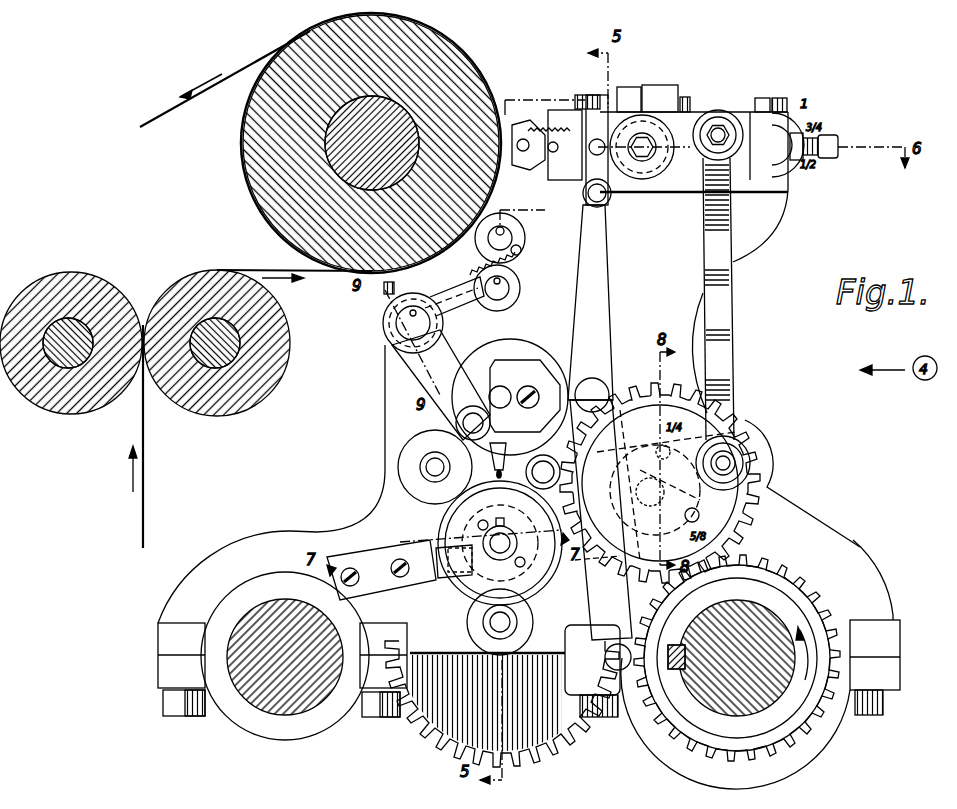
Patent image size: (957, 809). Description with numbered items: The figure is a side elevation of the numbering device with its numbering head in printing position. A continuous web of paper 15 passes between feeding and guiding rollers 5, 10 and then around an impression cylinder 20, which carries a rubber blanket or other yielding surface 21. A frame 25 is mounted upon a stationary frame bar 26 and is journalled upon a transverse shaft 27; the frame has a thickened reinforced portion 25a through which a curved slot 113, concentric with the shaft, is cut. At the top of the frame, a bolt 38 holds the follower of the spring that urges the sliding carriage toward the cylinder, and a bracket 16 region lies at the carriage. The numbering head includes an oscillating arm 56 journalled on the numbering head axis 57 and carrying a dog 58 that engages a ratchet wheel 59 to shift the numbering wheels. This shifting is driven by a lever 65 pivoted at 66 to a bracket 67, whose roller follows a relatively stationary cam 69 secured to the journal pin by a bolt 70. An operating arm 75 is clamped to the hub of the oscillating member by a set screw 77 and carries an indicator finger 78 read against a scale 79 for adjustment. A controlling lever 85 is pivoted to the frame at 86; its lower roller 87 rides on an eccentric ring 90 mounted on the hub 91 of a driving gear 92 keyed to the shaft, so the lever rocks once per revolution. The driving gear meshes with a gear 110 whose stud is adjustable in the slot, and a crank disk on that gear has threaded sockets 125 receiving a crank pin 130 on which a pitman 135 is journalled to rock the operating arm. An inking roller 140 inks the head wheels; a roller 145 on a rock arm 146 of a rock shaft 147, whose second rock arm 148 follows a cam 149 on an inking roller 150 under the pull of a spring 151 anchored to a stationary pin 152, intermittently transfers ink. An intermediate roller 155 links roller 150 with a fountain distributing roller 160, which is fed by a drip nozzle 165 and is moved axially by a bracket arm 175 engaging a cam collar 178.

The feeding and guiding roller 5 is at (64, 413).
The feeding and guiding roller 10 is at (222, 413).
The web of paper 15 is at (166, 112).
The bracket 16 is at (545, 110).
The impression cylinder 20 is at (274, 187).
The yielding surface 21 is at (250, 118).
The frame 25 is at (262, 538).
The thickened reinforced portion 25a is at (760, 456).
The stationary frame bar 26 is at (262, 712).
The transverse shaft 27 is at (700, 692).
The bolt 38 is at (832, 140).
The oscillating arm 56 is at (528, 170).
The numbering head axis 57 is at (520, 152).
The dog 58 is at (553, 155).
The ratchet wheel 59 is at (548, 150).
The lever 65 is at (600, 120).
The pivot 66 is at (603, 205).
The bracket 67 is at (560, 201).
The cam 69 is at (648, 180).
The bolt 70 is at (665, 86).
The operating arm 75 is at (712, 120).
The set screw 77 is at (684, 94).
The indicator finger 78 is at (786, 108).
The scale 79 is at (775, 170).
The controlling lever 85 is at (604, 303).
The pivot 86 is at (596, 390).
The antifrictional roller 87 is at (598, 558).
The eccentric ring 90 is at (795, 718).
The hub 91 is at (780, 728).
The driving gear 92 is at (766, 730).
The gear 110 is at (752, 525).
The curved slot 113 is at (700, 432).
The threaded sockets 125 is at (660, 455).
The crank pin 130 is at (722, 130).
The pitman 135 is at (734, 285).
The inking roller 140 is at (525, 236).
The roller 145 is at (520, 291).
The rock arm 146 is at (470, 313).
The rock shaft 147 is at (398, 332).
The rock arm 148 is at (432, 368).
The cam 149 is at (495, 374).
The inking roller 150 is at (525, 347).
The spring 151 is at (512, 283).
The stationary pin 152 is at (522, 251).
The intermediate roller 155 is at (398, 468).
The fountain distributing roller 160 is at (440, 520).
The drip nozzle 165 is at (498, 458).
The bracket arm 175 is at (400, 580).
The collar 178 is at (462, 578).